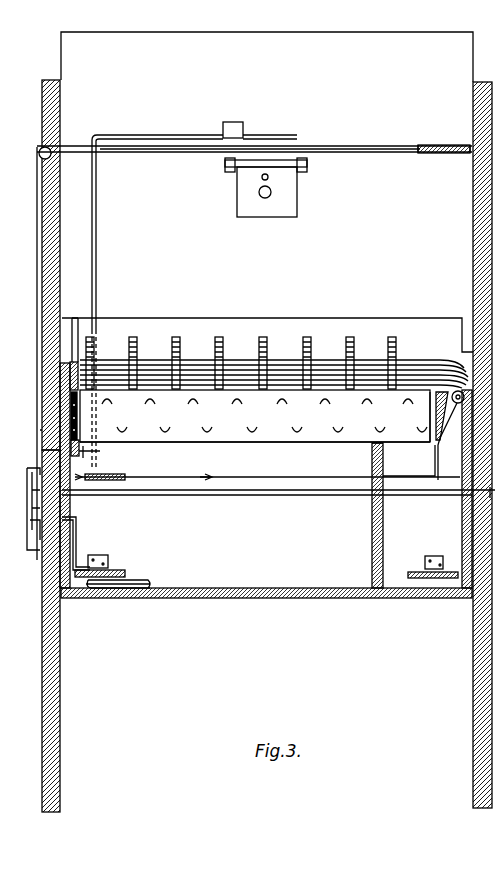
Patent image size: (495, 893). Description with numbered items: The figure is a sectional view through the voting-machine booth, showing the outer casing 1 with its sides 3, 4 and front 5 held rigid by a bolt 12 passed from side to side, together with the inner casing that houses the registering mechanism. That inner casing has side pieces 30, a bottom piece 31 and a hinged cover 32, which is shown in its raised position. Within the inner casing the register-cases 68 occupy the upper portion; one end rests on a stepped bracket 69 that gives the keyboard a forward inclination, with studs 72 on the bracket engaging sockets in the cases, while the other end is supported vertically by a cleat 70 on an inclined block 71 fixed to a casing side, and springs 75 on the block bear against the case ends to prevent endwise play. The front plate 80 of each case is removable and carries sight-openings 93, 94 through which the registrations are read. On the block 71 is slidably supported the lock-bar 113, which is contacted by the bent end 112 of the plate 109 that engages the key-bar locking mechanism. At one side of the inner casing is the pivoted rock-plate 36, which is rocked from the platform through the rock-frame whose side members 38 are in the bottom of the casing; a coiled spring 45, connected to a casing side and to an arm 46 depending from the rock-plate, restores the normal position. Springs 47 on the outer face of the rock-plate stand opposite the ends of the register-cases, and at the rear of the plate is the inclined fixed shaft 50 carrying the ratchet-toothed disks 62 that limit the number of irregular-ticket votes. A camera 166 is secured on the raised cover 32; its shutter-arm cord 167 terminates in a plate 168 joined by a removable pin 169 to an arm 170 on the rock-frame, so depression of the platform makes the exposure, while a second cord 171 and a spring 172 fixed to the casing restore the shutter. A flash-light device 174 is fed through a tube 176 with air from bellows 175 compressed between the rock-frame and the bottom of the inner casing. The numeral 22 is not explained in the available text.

The outer casing 1 is at (42, 631).
The side 3 is at (40, 152).
The side 4 is at (473, 630).
The front 5 is at (42, 318).
The bolt 12 is at (242, 496).
The bracket 22 is at (21, 431).
The side pieces 30 is at (62, 387).
The bottom piece 31 is at (210, 593).
The cover 32 is at (267, 57).
The rock-plate 36 is at (441, 438).
The side members 38 is at (108, 566).
The coiled spring 45 is at (267, 468).
The arm 46 is at (409, 460).
The springs 47 is at (436, 413).
The inclined fixed shaft 50 is at (456, 414).
The disks 62 is at (464, 360).
The register-cases 68 is at (255, 451).
The stepped bracket 69 is at (372, 520).
The cleat 70 is at (100, 452).
The inclined block 71 is at (72, 452).
The studs 72 is at (374, 445).
The springs 75 is at (72, 413).
The front plate 80 is at (255, 416).
The sight-openings 93 is at (257, 405).
The sight-openings 94 is at (272, 433).
The plate 109 is at (112, 357).
The bent end 112 is at (80, 338).
The lock-bar 113 is at (70, 367).
The camera 166 is at (278, 187).
The cord or chain 167 is at (163, 148).
The plate 168 is at (36, 527).
The removable pin 169 is at (32, 509).
The arm 170 is at (80, 528).
The cord or chain 171 is at (381, 149).
The spring 172 is at (440, 142).
The flash-light device 174 is at (243, 125).
The bellows 175 is at (117, 590).
The tube 176 is at (96, 222).